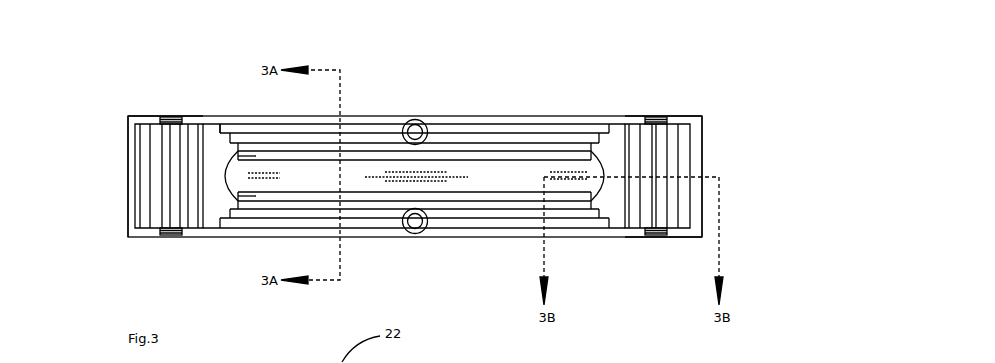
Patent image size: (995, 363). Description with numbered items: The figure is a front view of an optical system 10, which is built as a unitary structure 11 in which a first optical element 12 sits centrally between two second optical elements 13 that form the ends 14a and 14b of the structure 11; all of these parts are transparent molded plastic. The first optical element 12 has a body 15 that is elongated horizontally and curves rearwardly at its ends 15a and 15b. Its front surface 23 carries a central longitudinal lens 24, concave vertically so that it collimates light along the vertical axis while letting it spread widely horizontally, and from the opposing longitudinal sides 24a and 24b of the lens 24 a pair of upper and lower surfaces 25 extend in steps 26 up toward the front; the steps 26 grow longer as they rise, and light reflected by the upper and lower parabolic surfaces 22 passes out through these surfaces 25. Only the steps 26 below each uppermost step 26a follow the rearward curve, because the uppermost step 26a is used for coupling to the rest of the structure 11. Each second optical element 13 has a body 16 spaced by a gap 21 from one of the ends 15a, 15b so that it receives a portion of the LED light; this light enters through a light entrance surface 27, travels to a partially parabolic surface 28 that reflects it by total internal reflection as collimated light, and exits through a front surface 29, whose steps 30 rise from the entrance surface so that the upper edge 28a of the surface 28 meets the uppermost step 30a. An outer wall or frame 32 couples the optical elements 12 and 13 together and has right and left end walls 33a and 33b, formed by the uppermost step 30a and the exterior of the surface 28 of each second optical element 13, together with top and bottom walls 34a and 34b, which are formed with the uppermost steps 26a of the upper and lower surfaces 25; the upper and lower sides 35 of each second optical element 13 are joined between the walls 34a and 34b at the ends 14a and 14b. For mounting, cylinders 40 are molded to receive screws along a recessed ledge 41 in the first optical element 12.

The optical system 10 is at (289, 39).
The unitary structure 11 is at (518, 237).
The first optical element 12 is at (548, 135).
The second optical elements 13 is at (165, 118).
The end 14a is at (702, 168).
The end 14b is at (128, 208).
The body 15 is at (474, 222).
The end 15a is at (606, 188).
The end 15b is at (231, 180).
The body 16 is at (652, 122).
The gap 21 is at (207, 140).
The upper and lower parabolic surfaces 22 is at (314, 115).
The front surface 23 is at (492, 135).
The central longitudinal lens 24 is at (300, 188).
The longitudinal side 24a is at (240, 153).
The longitudinal side 24b is at (240, 199).
The upper and lower surfaces 25 is at (305, 135).
The steps 26 is at (366, 125).
The uppermost step 26a is at (446, 122).
The light entrance surface 27 is at (613, 132).
The partially parabolic surface 28 is at (702, 137).
The upper edge 28a is at (128, 130).
The front surface 29 is at (670, 213).
The steps 30 is at (690, 128).
The uppermost step 30a is at (128, 162).
The outer wall or frame 32 is at (702, 233).
The right end wall 33a is at (702, 147).
The left end wall 33b is at (128, 180).
The top wall 34a is at (220, 131).
The bottom wall 34b is at (232, 240).
The upper and lower sides 35 is at (176, 117).
The cylinders 40 is at (406, 117).
The recessed ledge 41 is at (421, 119).